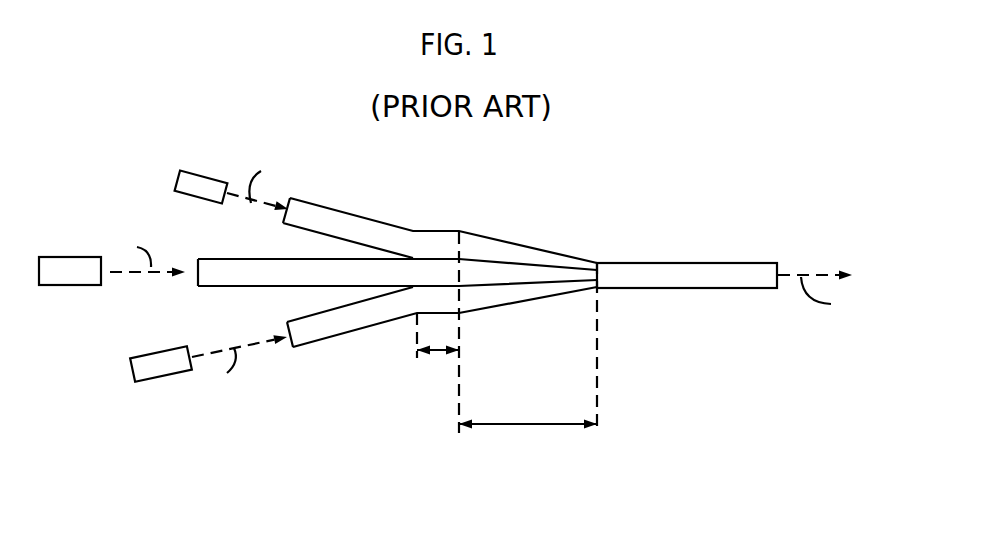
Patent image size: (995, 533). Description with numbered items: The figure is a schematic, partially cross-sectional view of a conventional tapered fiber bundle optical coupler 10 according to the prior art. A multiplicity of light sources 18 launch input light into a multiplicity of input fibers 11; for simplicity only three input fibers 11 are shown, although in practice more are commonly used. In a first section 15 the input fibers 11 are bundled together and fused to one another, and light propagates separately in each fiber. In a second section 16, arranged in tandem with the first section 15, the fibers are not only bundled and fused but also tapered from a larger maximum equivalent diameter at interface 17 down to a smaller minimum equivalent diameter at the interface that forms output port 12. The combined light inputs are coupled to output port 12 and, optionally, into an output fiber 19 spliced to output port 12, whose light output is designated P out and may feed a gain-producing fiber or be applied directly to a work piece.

The TFB optical coupler 10 is at (637, 193).
The input fibers 11 is at (335, 215).
The output port 12 is at (597, 262).
The first section 15 is at (435, 353).
The second section 16 is at (515, 427).
The interface 17 is at (459, 232).
The light sources 18 is at (191, 173).
The output fiber 19 is at (687, 262).